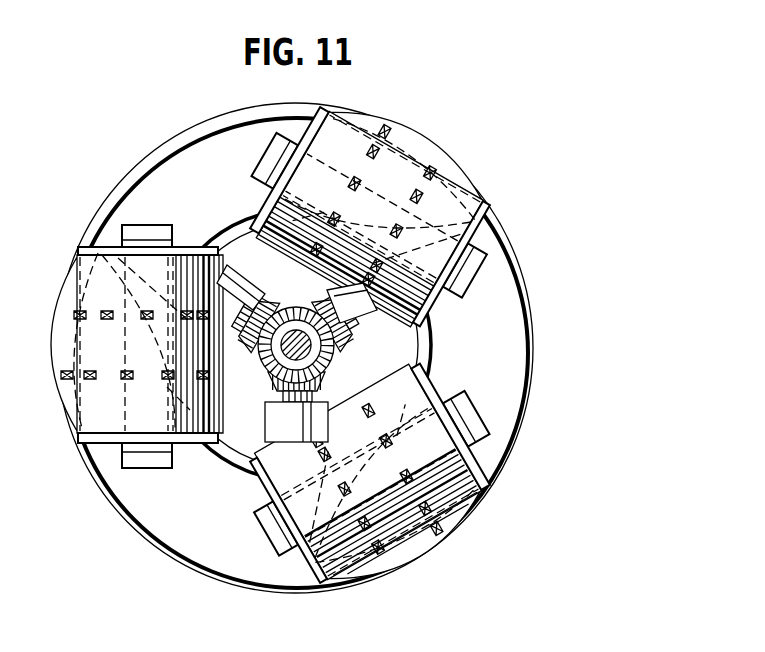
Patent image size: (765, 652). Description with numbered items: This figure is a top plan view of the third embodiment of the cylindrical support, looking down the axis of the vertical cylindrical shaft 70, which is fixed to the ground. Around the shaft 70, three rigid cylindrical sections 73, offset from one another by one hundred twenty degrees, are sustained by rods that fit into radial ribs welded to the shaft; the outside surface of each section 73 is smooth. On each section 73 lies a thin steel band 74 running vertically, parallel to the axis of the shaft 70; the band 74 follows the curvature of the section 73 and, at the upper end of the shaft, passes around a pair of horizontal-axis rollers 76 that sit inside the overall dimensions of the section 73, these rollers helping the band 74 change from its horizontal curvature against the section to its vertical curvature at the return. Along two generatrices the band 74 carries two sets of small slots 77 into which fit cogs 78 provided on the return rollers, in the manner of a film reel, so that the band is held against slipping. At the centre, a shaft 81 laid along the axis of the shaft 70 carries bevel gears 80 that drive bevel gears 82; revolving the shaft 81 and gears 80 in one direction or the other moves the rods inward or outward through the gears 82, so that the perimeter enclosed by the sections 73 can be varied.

The vertical cylindrical shaft 70 is at (433, 337).
The rigid cylindrical section 73 is at (197, 125).
The thin steel band 74 is at (412, 127).
The rollers 76 is at (252, 193).
The small slots 77 is at (417, 207).
The cogs 78 is at (392, 463).
The bevel gears 80 is at (297, 306).
The shaft 81 is at (333, 368).
The bevel gears 82 is at (268, 383).